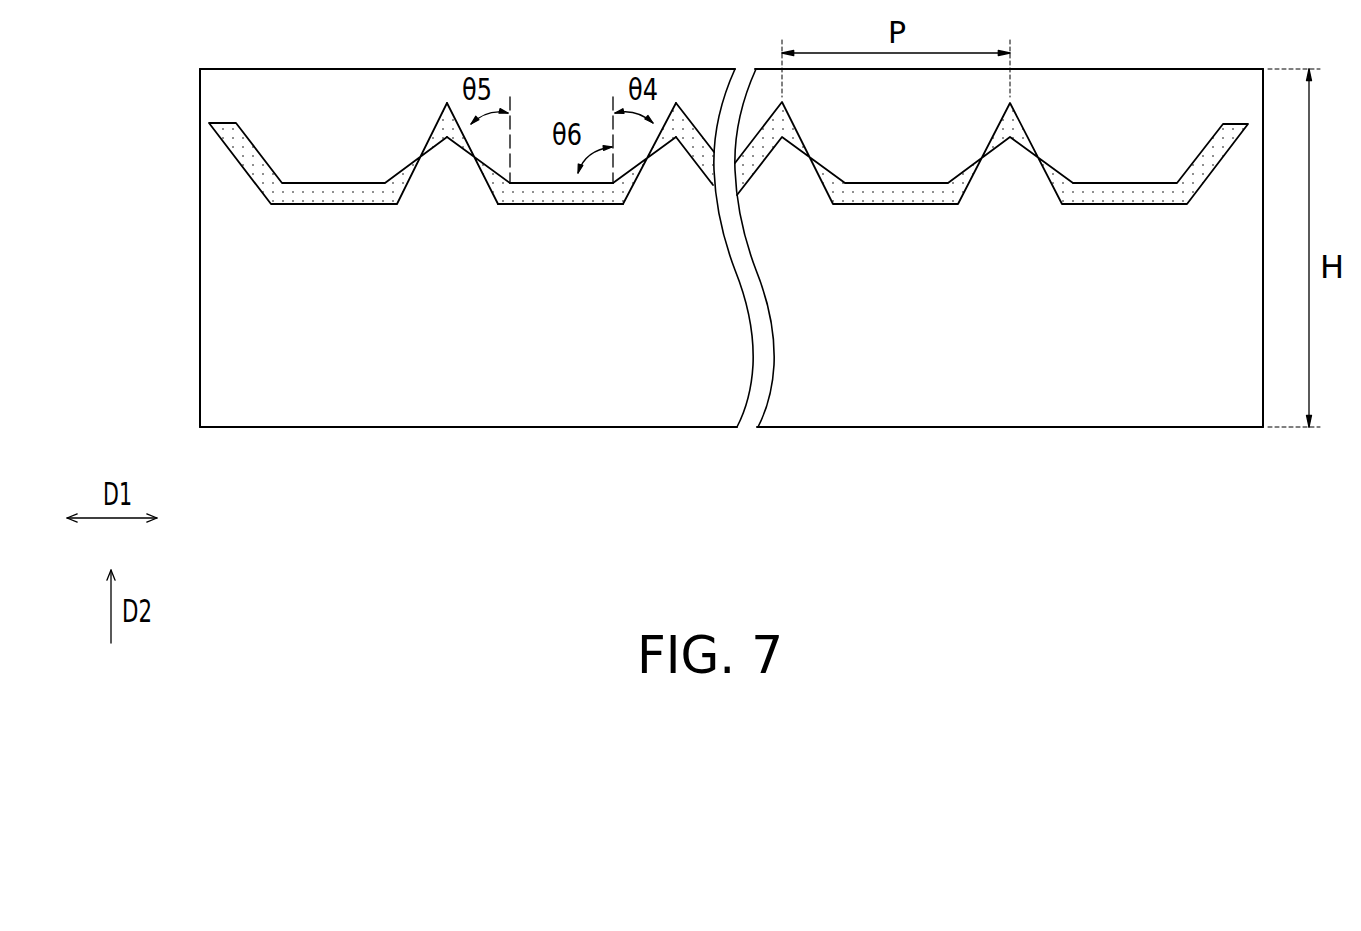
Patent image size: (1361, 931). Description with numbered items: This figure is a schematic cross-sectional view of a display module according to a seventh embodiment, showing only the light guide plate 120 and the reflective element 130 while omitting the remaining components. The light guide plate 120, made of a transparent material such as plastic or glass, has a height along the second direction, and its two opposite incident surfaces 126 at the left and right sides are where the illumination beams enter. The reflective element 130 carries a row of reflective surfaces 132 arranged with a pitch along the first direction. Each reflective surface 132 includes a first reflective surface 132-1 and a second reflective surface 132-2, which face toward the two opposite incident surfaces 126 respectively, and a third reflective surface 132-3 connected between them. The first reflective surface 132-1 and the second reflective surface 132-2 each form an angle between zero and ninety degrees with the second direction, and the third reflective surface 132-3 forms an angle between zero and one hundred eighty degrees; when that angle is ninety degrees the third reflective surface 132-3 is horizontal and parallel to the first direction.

The light guide plate 120 is at (218, 307).
The incident surfaces 126 is at (201, 388).
The reflective element 130 is at (728, 340).
The reflective surfaces 132 is at (728, 307).
The first reflective surface 132-1 is at (645, 185).
The second reflective surface 132-2 is at (477, 180).
The third reflective surface 132-3 is at (562, 207).